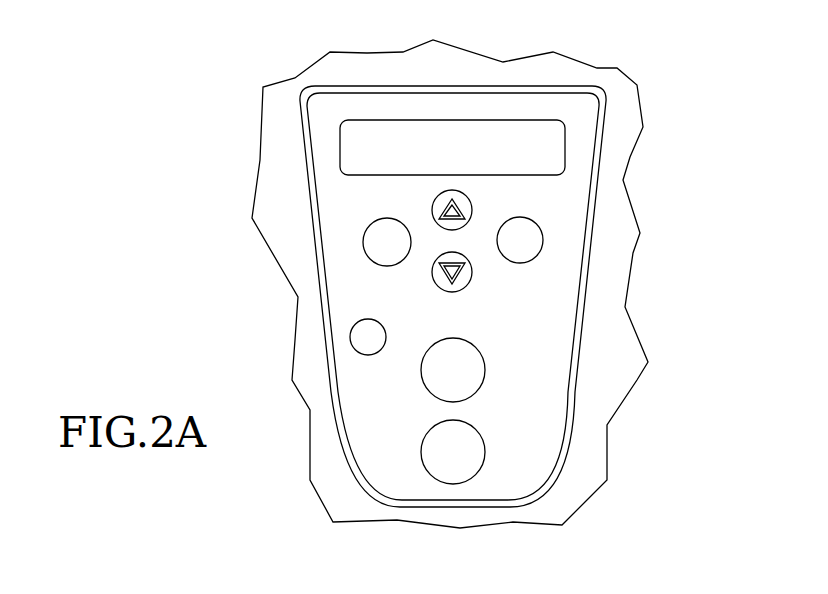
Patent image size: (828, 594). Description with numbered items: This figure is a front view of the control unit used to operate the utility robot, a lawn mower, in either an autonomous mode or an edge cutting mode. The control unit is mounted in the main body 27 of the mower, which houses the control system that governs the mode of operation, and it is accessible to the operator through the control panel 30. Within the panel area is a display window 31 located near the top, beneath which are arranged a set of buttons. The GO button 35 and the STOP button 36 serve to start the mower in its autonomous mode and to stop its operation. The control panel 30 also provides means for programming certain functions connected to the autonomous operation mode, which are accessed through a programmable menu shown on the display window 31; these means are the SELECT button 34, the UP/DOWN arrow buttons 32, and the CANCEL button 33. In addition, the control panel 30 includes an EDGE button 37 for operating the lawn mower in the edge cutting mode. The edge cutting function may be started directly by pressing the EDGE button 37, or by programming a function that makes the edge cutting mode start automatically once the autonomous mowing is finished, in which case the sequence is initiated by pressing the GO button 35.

The main body 27 is at (330, 70).
The control panel 30 is at (528, 86).
The display window 31 is at (548, 148).
The UP/DOWN arrow buttons 32 is at (467, 227).
The CANCEL button 33 is at (545, 242).
The SELECT button 34 is at (377, 258).
The GO button 35 is at (482, 378).
The STOP button 36 is at (422, 458).
The EDGE button 37 is at (355, 347).